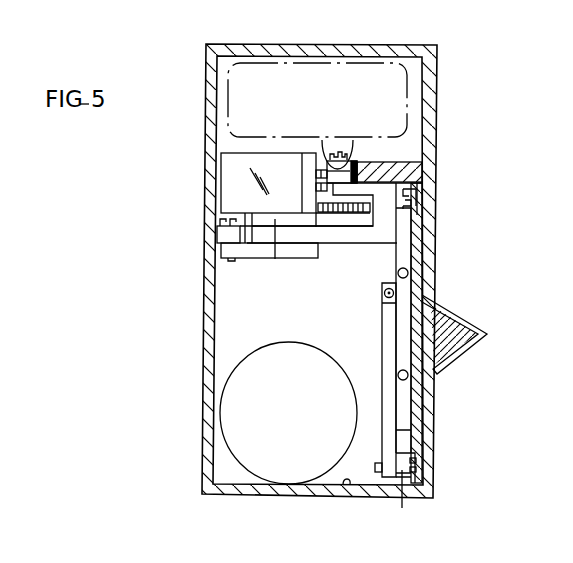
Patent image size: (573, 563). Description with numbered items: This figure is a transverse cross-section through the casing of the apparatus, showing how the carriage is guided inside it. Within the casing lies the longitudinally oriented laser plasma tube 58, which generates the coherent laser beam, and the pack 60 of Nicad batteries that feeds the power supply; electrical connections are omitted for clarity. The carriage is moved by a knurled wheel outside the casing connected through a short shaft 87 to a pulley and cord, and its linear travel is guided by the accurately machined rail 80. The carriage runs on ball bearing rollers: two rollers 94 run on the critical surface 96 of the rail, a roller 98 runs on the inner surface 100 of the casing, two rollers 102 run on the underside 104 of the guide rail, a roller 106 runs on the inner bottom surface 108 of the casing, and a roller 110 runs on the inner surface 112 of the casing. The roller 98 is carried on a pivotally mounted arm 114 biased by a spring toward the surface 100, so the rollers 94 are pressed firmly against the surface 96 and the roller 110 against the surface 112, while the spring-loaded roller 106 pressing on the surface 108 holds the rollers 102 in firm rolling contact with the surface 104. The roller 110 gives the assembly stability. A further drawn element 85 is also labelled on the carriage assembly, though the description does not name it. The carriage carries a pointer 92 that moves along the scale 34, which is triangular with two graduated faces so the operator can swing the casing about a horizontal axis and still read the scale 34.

The scale 34 is at (447, 352).
The laser plasma tube 58 is at (238, 413).
The pack of Nicad batteries 60 is at (330, 74).
The rail 80 is at (418, 164).
The lower pin 85 is at (398, 375).
The short shaft 87 is at (408, 272).
The pointer 92 is at (455, 312).
The rollers 94 is at (352, 158).
The critical surface 96 is at (327, 154).
The roller 98 is at (223, 237).
The inner surface of the casing 100 is at (218, 311).
The rollers 102 is at (420, 210).
The underside of the guide rail 104 is at (418, 187).
The roller 106 is at (402, 508).
The inner bottom surface of the casing 108 is at (348, 485).
The roller 110 is at (417, 461).
The inner surface of the casing 112 is at (418, 403).
The pivotally mounted arm 114 is at (275, 259).